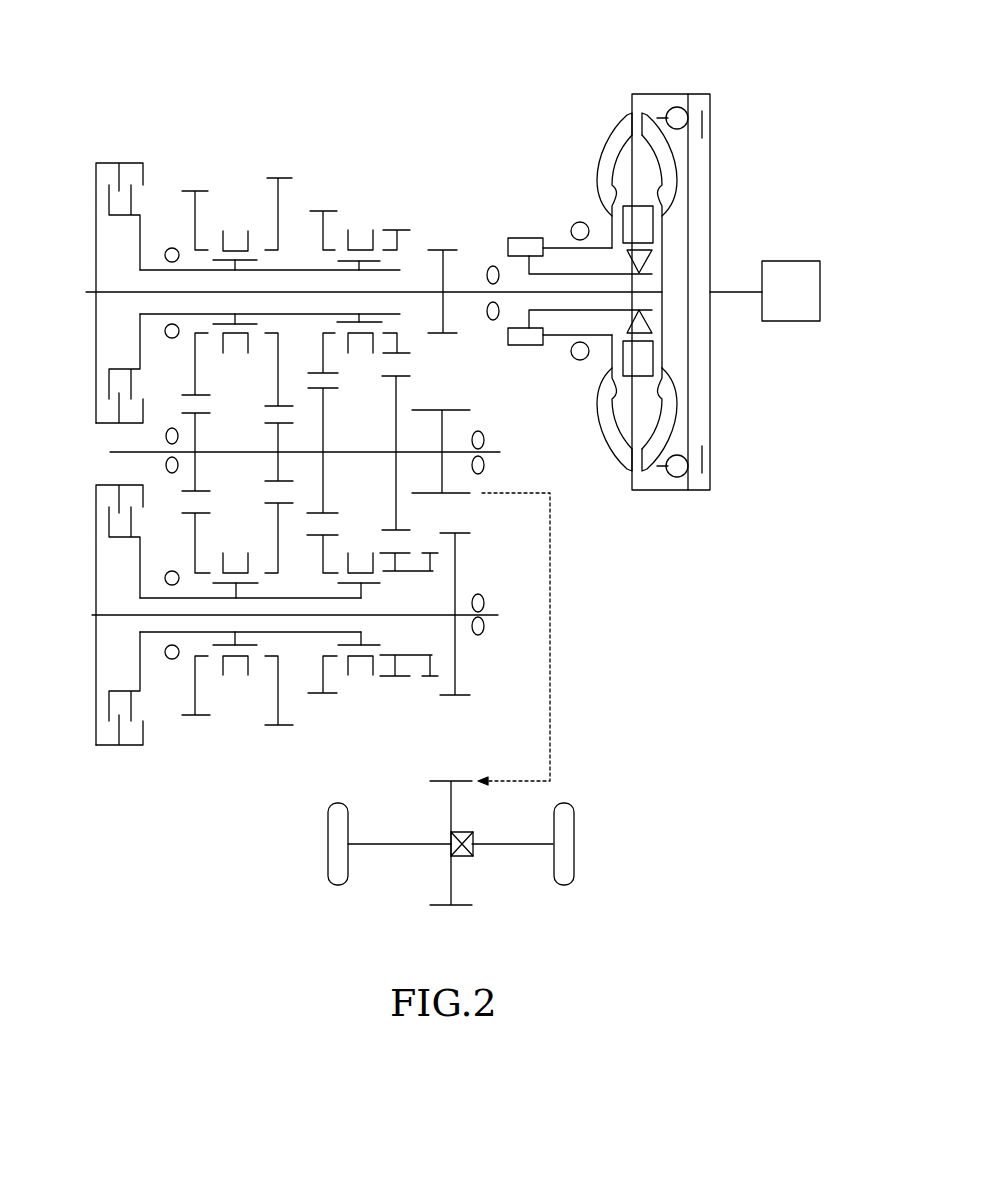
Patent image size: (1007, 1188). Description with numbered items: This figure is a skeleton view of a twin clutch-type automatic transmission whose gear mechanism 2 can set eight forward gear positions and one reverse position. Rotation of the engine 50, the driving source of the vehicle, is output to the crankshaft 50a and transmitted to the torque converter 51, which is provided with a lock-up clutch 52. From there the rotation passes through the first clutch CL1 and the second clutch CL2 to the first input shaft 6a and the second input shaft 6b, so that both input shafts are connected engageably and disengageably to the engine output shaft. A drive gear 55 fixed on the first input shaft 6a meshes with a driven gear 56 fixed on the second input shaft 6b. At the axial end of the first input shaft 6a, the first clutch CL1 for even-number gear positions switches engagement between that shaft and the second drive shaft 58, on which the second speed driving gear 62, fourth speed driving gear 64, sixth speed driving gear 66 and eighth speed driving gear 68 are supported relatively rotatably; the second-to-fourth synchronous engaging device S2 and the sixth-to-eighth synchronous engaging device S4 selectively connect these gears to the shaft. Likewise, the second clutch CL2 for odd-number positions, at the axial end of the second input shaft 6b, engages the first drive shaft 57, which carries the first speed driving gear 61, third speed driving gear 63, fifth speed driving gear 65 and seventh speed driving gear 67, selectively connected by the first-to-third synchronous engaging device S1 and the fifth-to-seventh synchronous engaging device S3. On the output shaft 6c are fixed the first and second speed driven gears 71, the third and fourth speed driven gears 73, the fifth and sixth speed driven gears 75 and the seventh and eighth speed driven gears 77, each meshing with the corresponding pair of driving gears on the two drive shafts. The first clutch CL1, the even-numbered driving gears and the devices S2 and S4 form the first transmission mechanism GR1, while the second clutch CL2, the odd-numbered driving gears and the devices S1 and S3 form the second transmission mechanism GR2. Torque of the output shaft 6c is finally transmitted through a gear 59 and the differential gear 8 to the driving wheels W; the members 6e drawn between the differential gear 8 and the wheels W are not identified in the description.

The gear mechanism 2 is at (430, 127).
The torque converter 51 is at (662, 92).
The lock-up clutch 52 is at (712, 125).
The engine 50 is at (805, 262).
The crankshaft 50a is at (728, 292).
The first input shaft 6a is at (465, 292).
The second input shaft 6b is at (493, 613).
The output shaft 6c is at (494, 450).
The drive shaft 6e is at (405, 848).
The differential gear 8 is at (462, 782).
The drive gear 55 is at (448, 250).
The driven gear 56 is at (470, 536).
The first drive shaft 57 is at (288, 598).
The second drive shaft 58 is at (300, 270).
The gear 59 is at (455, 410).
The first speed driving gear 61 is at (402, 682).
The second speed driving gear 62 is at (400, 232).
The third speed driving gear 63 is at (327, 697).
The fourth speed driving gear 64 is at (325, 212).
The fifth speed driving gear 65 is at (202, 720).
The sixth speed driving gear 66 is at (200, 191).
The seventh speed driving gear 67 is at (280, 728).
The eighth speed driving gear 68 is at (280, 180).
The first and second speed driven gears 71 is at (398, 405).
The third and fourth speed driven gears 73 is at (325, 422).
The fifth and sixth speed driven gears 75 is at (199, 437).
The seventh and eighth speed driven gears 77 is at (280, 452).
The driving wheels W is at (325, 838).
The first clutch CL1 is at (98, 165).
The second clutch CL2 is at (108, 748).
The first transmission mechanism GR1 is at (222, 140).
The second transmission mechanism GR2 is at (240, 758).
The first-to-third speed synchronous engaging device S1 is at (355, 552).
The second-to-fourth speed synchronous engaging device S2 is at (360, 232).
The fifth-to-seventh speed synchronous engaging device S3 is at (230, 552).
The sixth-to-eighth speed synchronous engaging device S4 is at (236, 232).